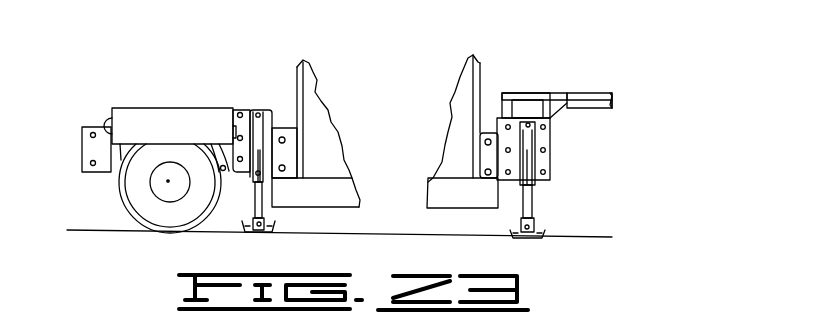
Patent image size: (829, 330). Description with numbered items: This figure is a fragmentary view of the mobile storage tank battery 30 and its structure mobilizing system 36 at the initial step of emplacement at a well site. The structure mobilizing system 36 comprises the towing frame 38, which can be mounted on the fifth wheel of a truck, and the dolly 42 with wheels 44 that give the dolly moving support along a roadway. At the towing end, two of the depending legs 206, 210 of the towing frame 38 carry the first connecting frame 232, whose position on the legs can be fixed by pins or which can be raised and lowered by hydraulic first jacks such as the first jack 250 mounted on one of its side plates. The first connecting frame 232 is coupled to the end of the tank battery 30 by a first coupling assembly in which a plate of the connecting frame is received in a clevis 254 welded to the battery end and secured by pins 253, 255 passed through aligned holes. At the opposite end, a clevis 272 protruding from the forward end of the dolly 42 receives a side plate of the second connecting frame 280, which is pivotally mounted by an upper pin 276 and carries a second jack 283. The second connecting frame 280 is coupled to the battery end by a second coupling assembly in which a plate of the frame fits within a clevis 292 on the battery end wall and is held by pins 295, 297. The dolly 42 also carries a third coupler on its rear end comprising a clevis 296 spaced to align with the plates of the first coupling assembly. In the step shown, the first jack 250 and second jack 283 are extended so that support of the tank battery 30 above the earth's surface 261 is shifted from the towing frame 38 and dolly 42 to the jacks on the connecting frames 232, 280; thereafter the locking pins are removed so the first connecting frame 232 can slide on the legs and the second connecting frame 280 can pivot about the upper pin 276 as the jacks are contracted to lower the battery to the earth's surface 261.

The mobile storage tank battery 30 is at (491, 49).
The structure mobilizing system 36 is at (624, 97).
The towing frame 38 is at (583, 95).
The dolly 42 is at (127, 118).
The wheels 44 is at (138, 198).
The depending leg 206 is at (507, 107).
The depending leg 210 is at (544, 104).
The first connecting frame 232 is at (553, 138).
The first jack 250 is at (526, 165).
The pin 253 is at (487, 141).
The clevis 254 is at (487, 153).
The pin 255 is at (486, 172).
The earth's surface 261 is at (304, 235).
The clevis 272 is at (236, 132).
The upper pin 276 is at (250, 112).
The second connecting frame 280 is at (282, 103).
The second jack 283 is at (249, 173).
The clevis 292 is at (286, 155).
The pin 295 is at (285, 138).
The clevis 296 is at (95, 150).
The pin 297 is at (286, 168).